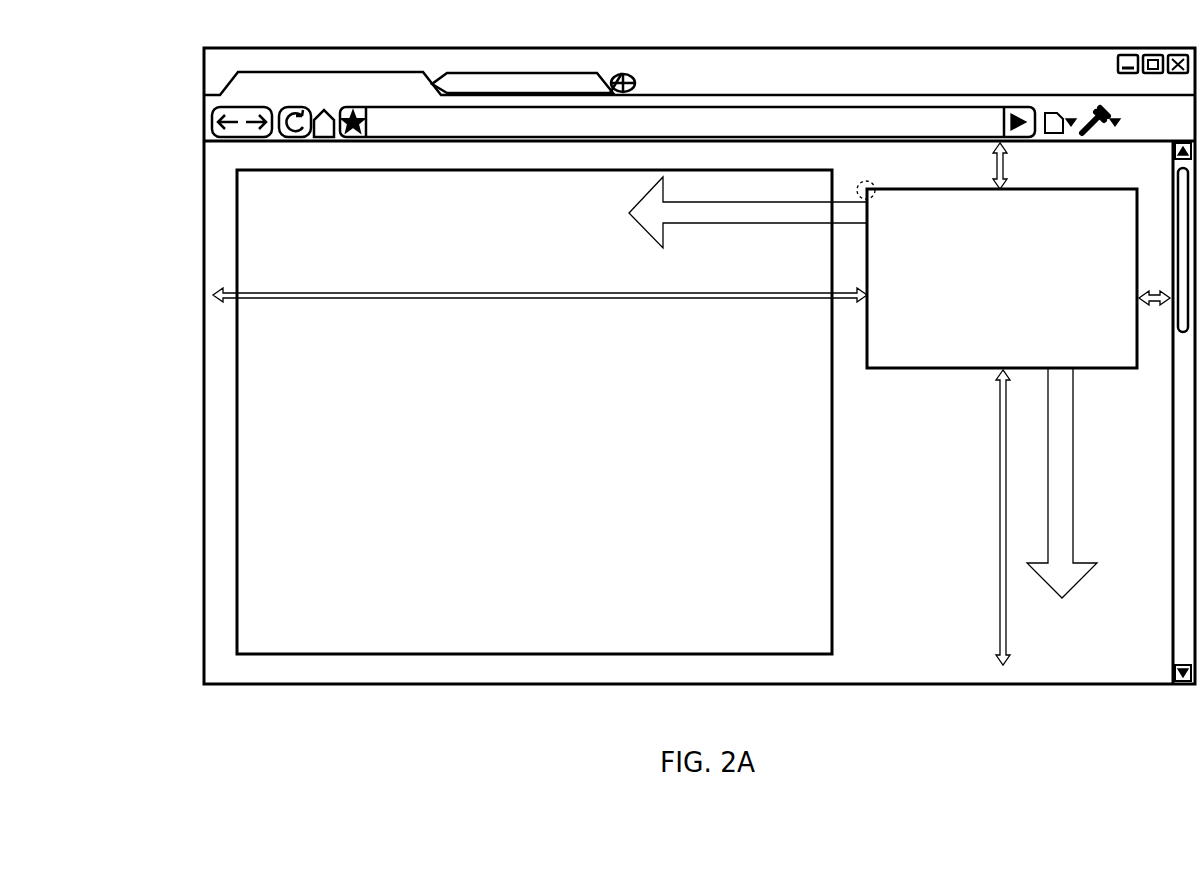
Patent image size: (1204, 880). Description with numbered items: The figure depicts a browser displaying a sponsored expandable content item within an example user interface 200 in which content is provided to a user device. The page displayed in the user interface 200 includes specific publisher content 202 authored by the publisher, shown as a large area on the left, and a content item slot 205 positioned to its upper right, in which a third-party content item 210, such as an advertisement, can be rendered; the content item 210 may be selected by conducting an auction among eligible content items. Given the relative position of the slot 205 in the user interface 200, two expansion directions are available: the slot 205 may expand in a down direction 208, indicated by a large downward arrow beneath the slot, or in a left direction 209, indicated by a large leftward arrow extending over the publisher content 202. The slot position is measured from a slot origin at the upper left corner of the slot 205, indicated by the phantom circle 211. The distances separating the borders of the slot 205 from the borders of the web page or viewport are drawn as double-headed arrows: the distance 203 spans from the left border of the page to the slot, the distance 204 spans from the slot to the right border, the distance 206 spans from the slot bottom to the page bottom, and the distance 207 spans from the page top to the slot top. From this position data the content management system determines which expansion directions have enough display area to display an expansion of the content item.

The user interface 200 is at (177, 60).
The publisher content 202 is at (534, 412).
The distance 203 is at (847, 300).
The distance 204 is at (1158, 303).
The content item slot 205 is at (940, 368).
The distance 206 is at (1002, 546).
The distance 207 is at (997, 163).
The down direction 208 is at (1073, 533).
The left direction 209 is at (700, 225).
The content item 210 is at (1003, 277).
The phantom circle 211 is at (866, 181).